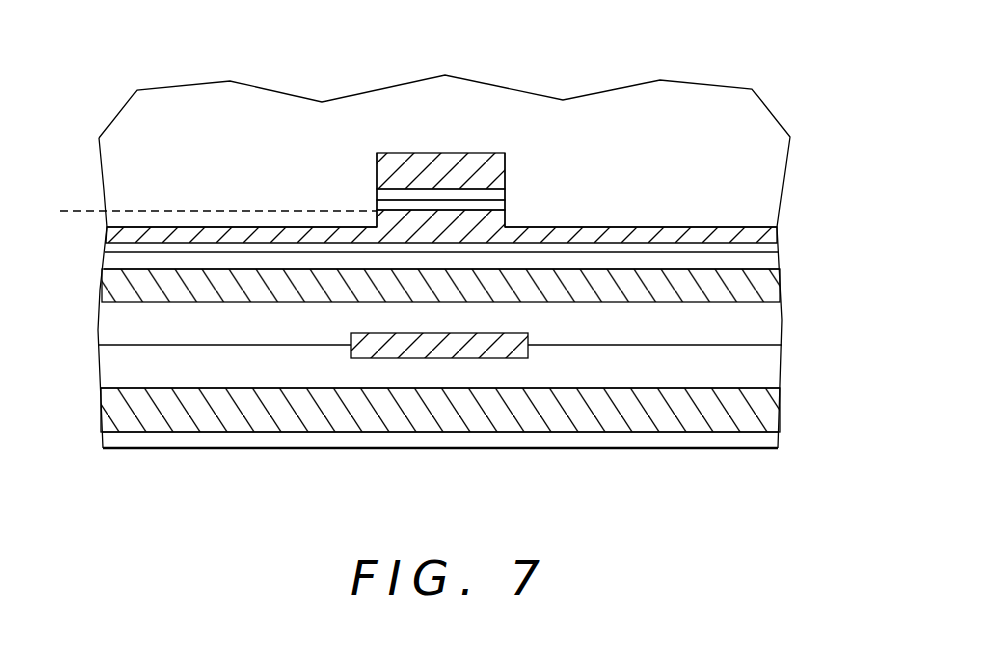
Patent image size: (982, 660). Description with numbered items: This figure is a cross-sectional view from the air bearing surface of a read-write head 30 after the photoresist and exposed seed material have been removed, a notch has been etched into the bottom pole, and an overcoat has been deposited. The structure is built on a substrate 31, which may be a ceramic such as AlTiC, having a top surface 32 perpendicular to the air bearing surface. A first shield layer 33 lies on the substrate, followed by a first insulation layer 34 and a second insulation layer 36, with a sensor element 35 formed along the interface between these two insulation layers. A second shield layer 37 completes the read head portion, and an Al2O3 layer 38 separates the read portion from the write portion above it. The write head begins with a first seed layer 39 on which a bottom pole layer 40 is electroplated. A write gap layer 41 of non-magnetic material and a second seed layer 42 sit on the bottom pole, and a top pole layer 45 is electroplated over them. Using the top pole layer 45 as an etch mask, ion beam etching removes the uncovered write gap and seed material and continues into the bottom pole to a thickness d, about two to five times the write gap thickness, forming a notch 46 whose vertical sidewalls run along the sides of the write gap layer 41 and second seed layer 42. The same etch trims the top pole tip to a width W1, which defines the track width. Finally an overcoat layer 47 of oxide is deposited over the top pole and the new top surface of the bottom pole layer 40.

The read-write head 30 is at (108, 103).
The substrate 31 is at (763, 440).
The top surface 32 is at (105, 430).
The first shield layer 33 is at (763, 410).
The first insulation layer 34 is at (763, 368).
The sensor element 35 is at (442, 347).
The second insulation layer 36 is at (757, 325).
The second shield layer 37 is at (763, 282).
The Al2O3 layer 38 is at (765, 260).
The first seed layer 39 is at (115, 247).
The bottom pole layer 40 is at (763, 232).
The write gap layer 41 is at (378, 203).
The second seed layer 42 is at (498, 195).
The top pole layer 45 is at (488, 167).
The notch 46 is at (508, 225).
The overcoat layer 47 is at (768, 167).
The width W1 is at (503, 126).
The thickness d is at (52, 175).